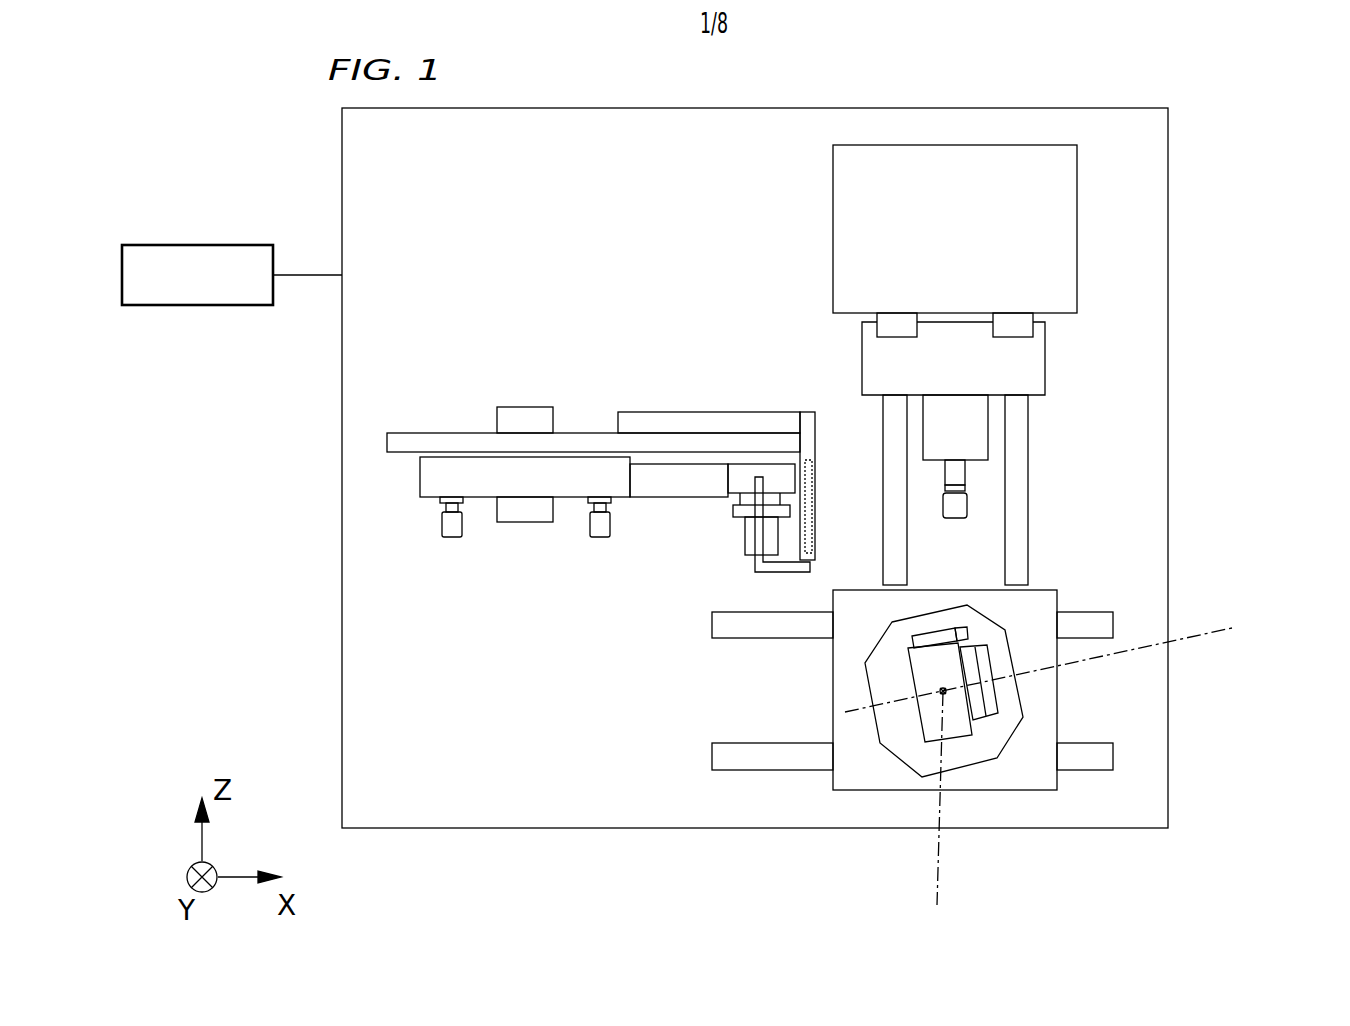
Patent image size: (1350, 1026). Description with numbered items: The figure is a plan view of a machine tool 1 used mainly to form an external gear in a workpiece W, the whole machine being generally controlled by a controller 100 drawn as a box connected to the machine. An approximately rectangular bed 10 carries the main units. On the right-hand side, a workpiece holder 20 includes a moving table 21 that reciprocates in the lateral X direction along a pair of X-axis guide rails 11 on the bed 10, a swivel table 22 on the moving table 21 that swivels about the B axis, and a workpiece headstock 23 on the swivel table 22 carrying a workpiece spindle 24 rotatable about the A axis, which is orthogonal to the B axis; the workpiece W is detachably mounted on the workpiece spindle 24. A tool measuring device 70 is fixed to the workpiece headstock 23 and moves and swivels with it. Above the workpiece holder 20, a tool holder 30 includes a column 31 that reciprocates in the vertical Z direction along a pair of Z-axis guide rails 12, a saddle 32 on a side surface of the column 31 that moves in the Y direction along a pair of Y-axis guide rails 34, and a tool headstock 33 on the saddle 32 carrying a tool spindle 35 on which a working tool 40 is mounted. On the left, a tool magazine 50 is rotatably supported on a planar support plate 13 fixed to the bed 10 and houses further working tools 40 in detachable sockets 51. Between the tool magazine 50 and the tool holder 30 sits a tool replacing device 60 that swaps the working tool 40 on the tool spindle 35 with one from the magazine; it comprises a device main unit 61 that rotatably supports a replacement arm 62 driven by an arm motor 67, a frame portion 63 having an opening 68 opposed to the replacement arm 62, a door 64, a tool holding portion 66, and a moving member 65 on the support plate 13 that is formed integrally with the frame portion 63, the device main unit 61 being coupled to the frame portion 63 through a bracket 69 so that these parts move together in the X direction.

The machine tool 1 is at (1227, 152).
The bed 10 is at (360, 157).
The controller 100 is at (238, 245).
The X-axis guide rails 11 is at (1129, 773).
The Z-axis guide rails 12 is at (1041, 563).
The support plate 13 is at (427, 440).
The workpiece holder 20 is at (1063, 801).
The moving table 21 is at (1038, 780).
The swivel table 22 is at (882, 730).
The workpiece headstock 23 is at (930, 743).
The workpiece spindle 24 is at (975, 720).
The tool holder 30 is at (1093, 194).
The column 31 is at (1065, 250).
The saddle 32 is at (1030, 357).
The tool headstock 33 is at (987, 423).
The Y-axis guide rails 34 is at (897, 325).
The tool spindle 35 is at (960, 475).
The working tool 40 is at (595, 527).
The tool magazine 50 is at (432, 477).
The sockets 51 is at (433, 505).
The tool replacing device 60 is at (692, 566).
The device main unit 61 is at (777, 473).
The replacement arm 62 is at (740, 493).
The frame portion 63 is at (807, 413).
The door 64 is at (797, 556).
The moving member 65 is at (690, 412).
The tool holding portion 66 is at (663, 485).
The arm motor 67 is at (750, 535).
The opening 68 is at (813, 548).
The bracket 69 is at (772, 563).
The tool measuring device 70 is at (908, 745).
The workpiece W is at (970, 648).
The A axis A is at (1223, 628).
The B axis B is at (939, 813).